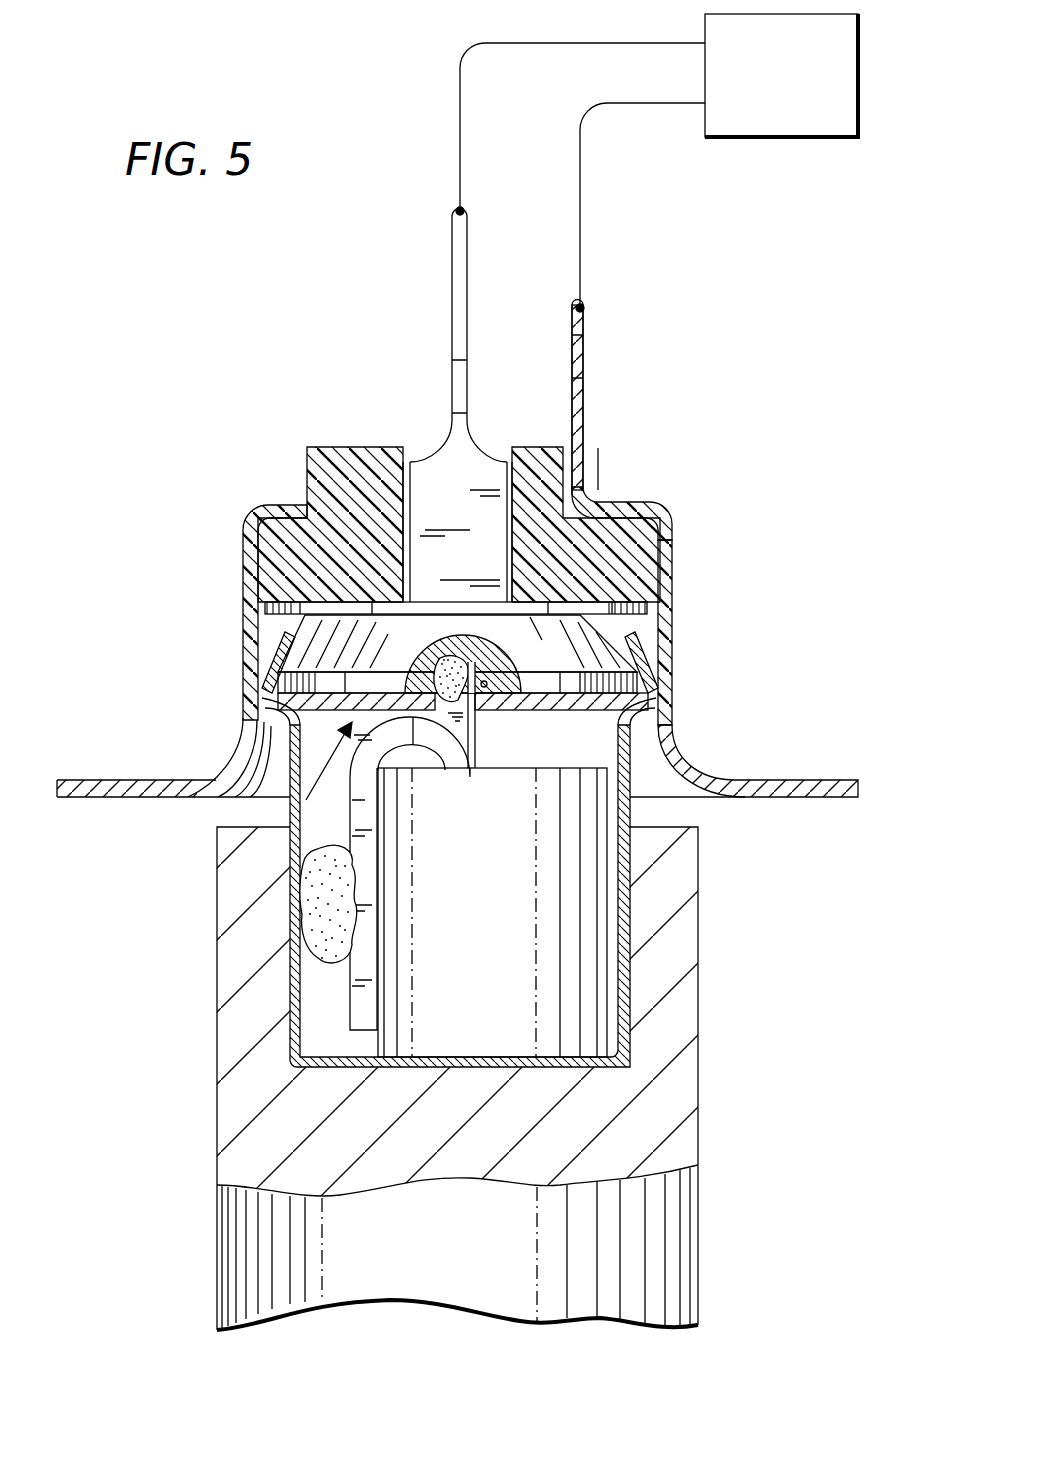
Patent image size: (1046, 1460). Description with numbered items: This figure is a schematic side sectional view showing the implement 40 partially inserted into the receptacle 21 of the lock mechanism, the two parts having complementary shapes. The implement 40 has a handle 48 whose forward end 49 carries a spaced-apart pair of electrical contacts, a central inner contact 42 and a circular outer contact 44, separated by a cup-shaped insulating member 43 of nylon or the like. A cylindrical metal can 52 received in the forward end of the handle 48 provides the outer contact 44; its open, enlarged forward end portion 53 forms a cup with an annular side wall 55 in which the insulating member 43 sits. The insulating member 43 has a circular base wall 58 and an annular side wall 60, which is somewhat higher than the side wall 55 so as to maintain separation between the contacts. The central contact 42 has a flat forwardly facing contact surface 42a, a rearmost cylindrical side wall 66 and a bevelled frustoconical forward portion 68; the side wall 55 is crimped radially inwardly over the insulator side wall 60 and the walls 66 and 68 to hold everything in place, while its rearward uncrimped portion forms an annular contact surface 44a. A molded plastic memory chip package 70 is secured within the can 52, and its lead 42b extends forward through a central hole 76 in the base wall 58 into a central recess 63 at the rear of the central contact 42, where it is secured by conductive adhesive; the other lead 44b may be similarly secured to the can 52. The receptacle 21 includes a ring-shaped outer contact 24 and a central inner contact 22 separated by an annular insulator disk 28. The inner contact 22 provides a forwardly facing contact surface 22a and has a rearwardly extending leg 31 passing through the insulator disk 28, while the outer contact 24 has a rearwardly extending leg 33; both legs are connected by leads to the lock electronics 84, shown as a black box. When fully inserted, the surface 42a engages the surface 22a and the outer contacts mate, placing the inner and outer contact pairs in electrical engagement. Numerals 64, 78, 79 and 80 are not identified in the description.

The receptacle 21 is at (633, 497).
The central inner contact 22 is at (292, 583).
The inner contact surface 22a is at (615, 43).
The outer contact 24 is at (300, 607).
The insulating member 28 is at (658, 546).
The leg 31 is at (452, 290).
The leg 33 is at (587, 325).
The implement 40 is at (718, 1050).
The central inner contact 42 is at (672, 576).
The contact surface 42a is at (640, 517).
The electrical lead 42b is at (475, 735).
The insulating member 43 is at (290, 814).
The outer contact 44 is at (286, 749).
The annular contact surface 44a is at (650, 693).
The electrical lead 44b is at (350, 1015).
The handle 48 is at (665, 1226).
The forward end 49 is at (700, 864).
The metal can 52 is at (300, 976).
The forward end portion 53 is at (276, 722).
The annular side wall 55 is at (270, 659).
The base wall 58 is at (650, 727).
The side wall 60 is at (632, 643).
The central recess 63 is at (488, 682).
The channel 64 is at (345, 615).
The cylindrical side wall 66 is at (290, 693).
The frustoconical annular forward portion 68 is at (300, 623).
The memory chip package 70 is at (492, 912).
The central hole 76 is at (482, 704).
The getter pellet 78 is at (300, 906).
The pellet 79 is at (425, 655).
The interface 80 is at (630, 943).
The electronics 84 is at (781, 75).